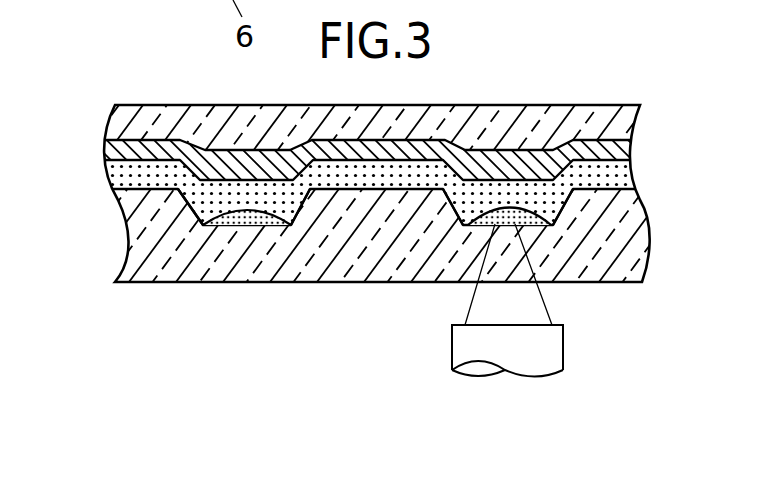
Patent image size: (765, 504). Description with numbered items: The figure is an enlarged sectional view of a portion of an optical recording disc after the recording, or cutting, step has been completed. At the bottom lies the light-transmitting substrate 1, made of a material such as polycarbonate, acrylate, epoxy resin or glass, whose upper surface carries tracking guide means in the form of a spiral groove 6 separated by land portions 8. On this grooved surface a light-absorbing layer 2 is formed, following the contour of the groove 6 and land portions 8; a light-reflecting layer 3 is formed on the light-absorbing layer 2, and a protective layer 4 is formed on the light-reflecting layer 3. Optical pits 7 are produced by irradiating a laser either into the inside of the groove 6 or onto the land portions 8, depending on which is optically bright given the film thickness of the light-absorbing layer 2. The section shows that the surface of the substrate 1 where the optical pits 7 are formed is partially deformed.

The light-transmitting substrate 1 is at (138, 240).
The light-absorbing layer 2 is at (132, 180).
The light-reflecting layer 3 is at (133, 148).
The protective layer 4 is at (132, 120).
The spiral groove 6 is at (201, 226).
The optical pits 7 is at (247, 220).
The land portions 8 is at (132, 192).